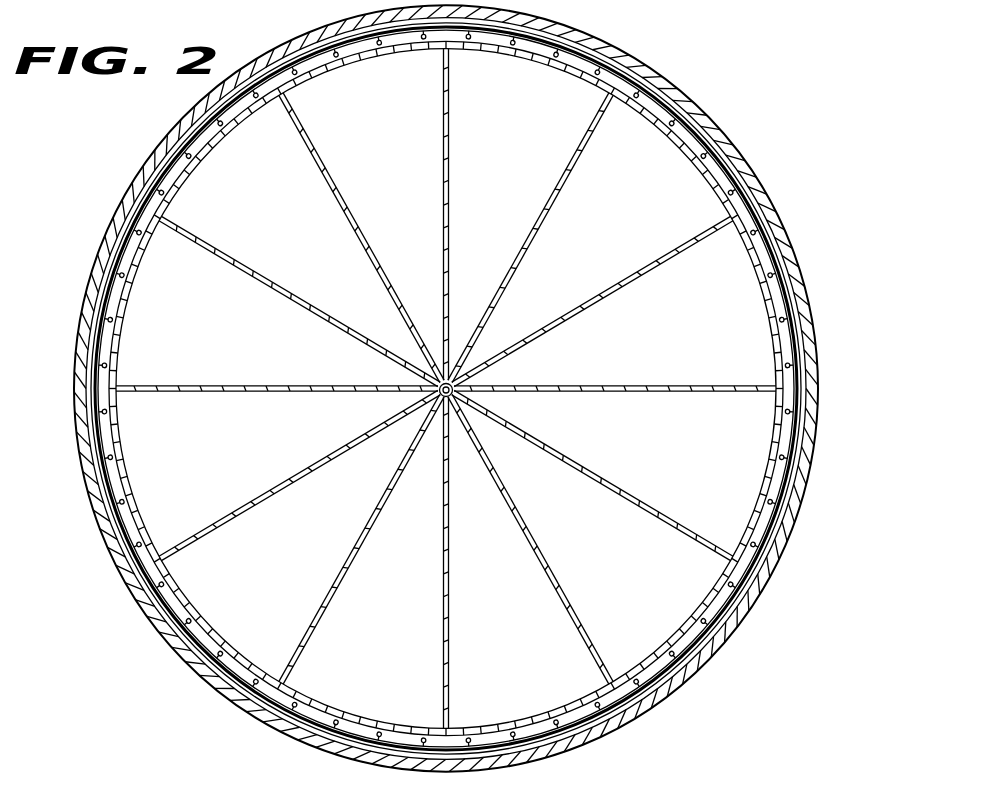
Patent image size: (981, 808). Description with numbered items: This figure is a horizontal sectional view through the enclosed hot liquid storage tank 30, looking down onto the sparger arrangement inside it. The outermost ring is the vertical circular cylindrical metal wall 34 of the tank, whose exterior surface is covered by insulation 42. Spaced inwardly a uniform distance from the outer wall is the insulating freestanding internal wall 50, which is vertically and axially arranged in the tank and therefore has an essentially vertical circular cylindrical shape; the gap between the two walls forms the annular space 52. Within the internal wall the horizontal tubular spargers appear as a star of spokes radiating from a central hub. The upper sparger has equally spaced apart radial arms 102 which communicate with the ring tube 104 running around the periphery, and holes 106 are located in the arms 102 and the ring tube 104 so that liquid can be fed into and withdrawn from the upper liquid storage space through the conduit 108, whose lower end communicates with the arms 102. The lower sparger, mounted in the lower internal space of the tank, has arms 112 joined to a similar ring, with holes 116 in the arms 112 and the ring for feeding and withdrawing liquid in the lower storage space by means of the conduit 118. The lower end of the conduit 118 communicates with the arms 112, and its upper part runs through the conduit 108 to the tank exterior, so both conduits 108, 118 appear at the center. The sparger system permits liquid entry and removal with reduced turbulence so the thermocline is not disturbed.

The hot liquid storage tank 30 is at (767, 190).
The vertical circular cylindrical metal wall 34 is at (664, 684).
The insulation 42 is at (700, 673).
The insulating freestanding internal wall 50 is at (640, 70).
The annular space 52 is at (228, 680).
The radial arms 102 is at (449, 147).
The ring tube 104 is at (121, 470).
The holes 106 is at (520, 52).
The conduit 108 is at (458, 387).
The arms 112 is at (348, 205).
The holes 116 is at (322, 172).
The conduit 118 is at (458, 396).